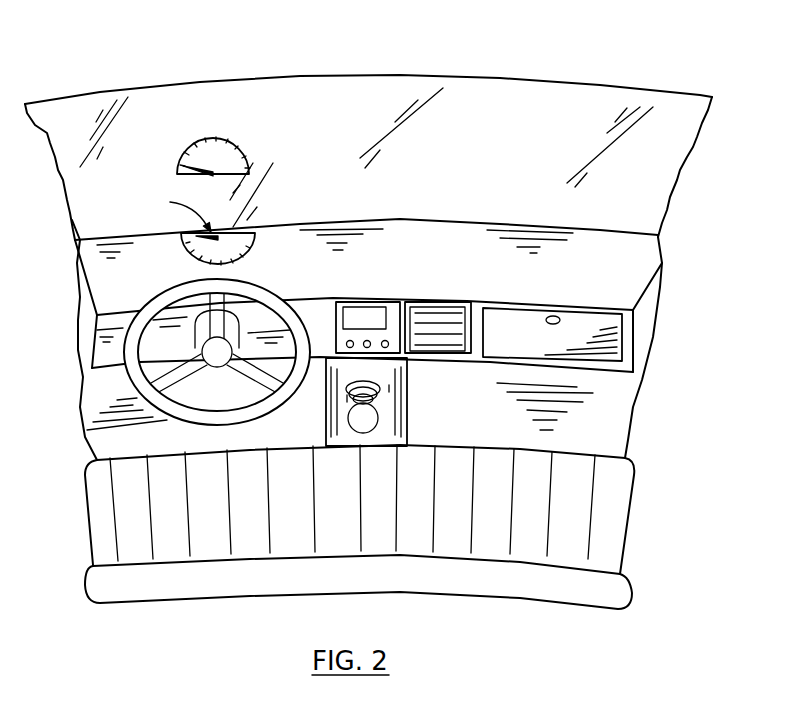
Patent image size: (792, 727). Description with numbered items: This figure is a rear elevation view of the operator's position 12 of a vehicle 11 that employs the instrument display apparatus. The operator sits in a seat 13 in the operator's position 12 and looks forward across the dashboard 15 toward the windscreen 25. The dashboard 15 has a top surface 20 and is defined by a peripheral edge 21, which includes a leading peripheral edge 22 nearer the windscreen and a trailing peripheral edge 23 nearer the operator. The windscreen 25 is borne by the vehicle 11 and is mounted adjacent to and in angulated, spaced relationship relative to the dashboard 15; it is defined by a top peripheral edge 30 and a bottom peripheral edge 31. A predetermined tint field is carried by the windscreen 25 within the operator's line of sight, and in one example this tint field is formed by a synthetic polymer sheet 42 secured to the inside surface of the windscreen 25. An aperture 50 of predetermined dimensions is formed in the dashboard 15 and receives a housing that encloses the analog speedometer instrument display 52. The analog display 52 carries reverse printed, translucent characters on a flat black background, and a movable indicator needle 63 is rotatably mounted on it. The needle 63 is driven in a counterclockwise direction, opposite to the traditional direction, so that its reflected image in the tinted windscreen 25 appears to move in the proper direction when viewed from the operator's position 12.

The vehicle 11 is at (650, 417).
The operator's position 12 is at (470, 411).
The seat 13 is at (442, 580).
The dashboard 15 is at (479, 267).
The top surface 20 is at (622, 282).
The peripheral edge 21 is at (534, 306).
The leading peripheral edge 22 is at (500, 222).
The trailing peripheral edge 23 is at (360, 298).
The windscreen 25 is at (360, 100).
The top peripheral edge 30 is at (285, 76).
The bottom peripheral edge 31 is at (542, 227).
The synthetic polymer sheet 42 is at (222, 137).
The aperture 50 is at (254, 246).
The analog speedometer instrument display 52 is at (179, 211).
The indicator needle 63 is at (188, 260).